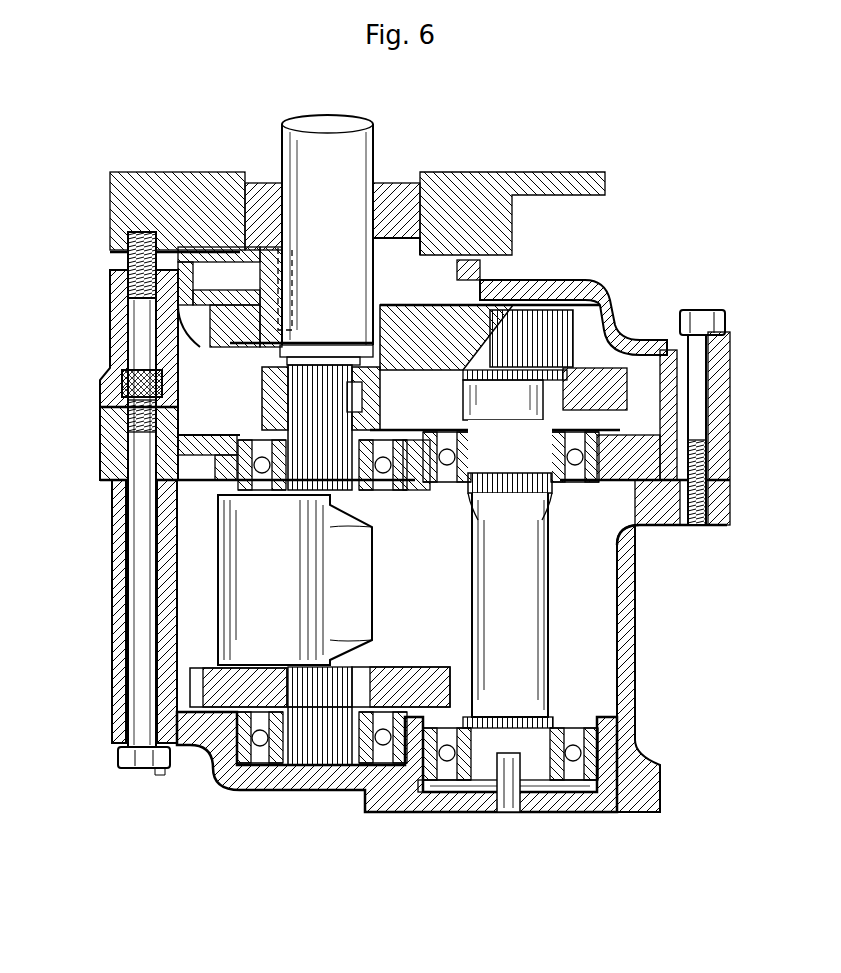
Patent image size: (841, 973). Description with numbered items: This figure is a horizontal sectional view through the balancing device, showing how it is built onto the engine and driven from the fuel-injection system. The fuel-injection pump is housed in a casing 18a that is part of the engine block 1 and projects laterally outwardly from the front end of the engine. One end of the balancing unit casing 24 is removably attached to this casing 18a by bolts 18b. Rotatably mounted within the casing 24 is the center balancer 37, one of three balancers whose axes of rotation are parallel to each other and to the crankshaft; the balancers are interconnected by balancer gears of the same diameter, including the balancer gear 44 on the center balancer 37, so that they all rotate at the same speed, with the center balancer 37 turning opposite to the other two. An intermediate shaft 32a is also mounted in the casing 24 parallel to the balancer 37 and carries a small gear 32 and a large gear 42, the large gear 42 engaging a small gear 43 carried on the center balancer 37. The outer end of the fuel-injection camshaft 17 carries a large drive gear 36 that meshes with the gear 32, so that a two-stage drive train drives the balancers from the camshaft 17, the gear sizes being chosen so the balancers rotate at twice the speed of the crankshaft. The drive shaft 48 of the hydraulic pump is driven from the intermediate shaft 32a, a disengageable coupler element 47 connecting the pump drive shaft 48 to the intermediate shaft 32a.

The engine block 1 is at (467, 236).
The fuel-injection camshaft 17 is at (368, 148).
The casing 18a is at (118, 206).
The bolts 18b is at (152, 320).
The casing 24 is at (100, 440).
The small gear 32 is at (548, 308).
The intermediate shaft 32a is at (552, 546).
The large drive gear 36 is at (417, 320).
The center balancer 37 is at (225, 596).
The large gear 42 is at (617, 368).
The small gear 43 is at (255, 385).
The balancer gear 44 is at (190, 690).
The disengageable coupler element 47 is at (518, 812).
The drive shaft 48 is at (503, 812).